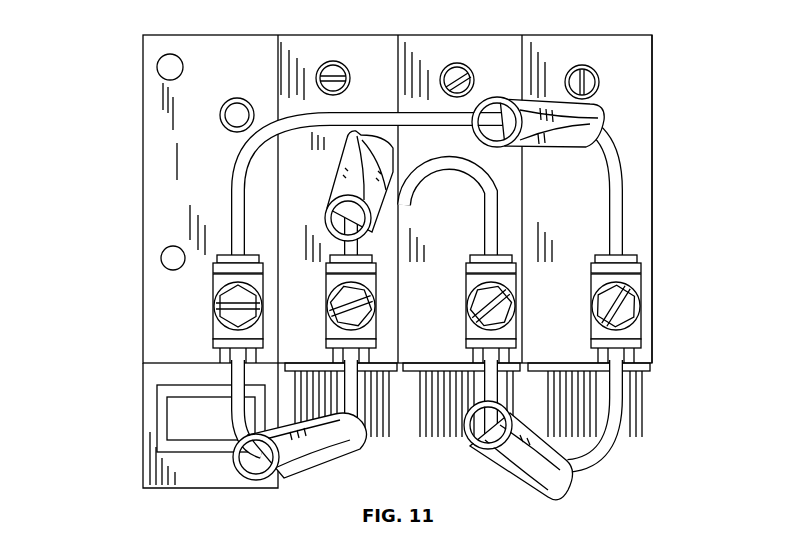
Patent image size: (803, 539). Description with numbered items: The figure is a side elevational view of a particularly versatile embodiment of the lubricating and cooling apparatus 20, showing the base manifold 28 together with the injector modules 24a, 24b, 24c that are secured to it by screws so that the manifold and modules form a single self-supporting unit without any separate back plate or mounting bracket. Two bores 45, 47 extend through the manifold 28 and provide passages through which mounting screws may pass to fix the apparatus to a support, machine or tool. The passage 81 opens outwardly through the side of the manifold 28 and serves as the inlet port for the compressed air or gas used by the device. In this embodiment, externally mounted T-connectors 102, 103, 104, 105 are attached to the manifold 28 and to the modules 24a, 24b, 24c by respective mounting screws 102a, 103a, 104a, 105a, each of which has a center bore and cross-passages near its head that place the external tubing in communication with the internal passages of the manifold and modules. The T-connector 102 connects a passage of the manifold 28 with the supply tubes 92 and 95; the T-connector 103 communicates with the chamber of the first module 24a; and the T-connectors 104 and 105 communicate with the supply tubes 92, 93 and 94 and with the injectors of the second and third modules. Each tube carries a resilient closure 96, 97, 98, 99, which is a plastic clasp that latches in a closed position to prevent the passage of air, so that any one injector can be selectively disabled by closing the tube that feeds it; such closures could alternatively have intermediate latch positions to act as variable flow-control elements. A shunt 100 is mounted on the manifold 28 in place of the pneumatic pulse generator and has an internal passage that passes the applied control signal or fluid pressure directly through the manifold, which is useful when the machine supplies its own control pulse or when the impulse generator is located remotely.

The apparatus 20 is at (654, 52).
The injector module 24a is at (308, 34).
The injector module 24b is at (410, 34).
The injector module 24c is at (548, 36).
The base manifold 28 is at (138, 40).
The bore 45 is at (161, 259).
The bore 47 is at (161, 76).
The passage 81 is at (220, 120).
The supply tube 92 is at (248, 158).
The supply tube 93 is at (461, 160).
The supply tube 94 is at (603, 447).
The supply tube 95 is at (231, 373).
The resilient closure 96 is at (551, 148).
The resilient closure 97 is at (500, 463).
The resilient closure 98 is at (308, 457).
The resilient closure 99 is at (348, 176).
The shunt 100 is at (143, 475).
The T-connector 102 is at (213, 286).
The mounting screw 102a is at (224, 313).
The T-connector 103 is at (328, 285).
The mounting screw 103a is at (347, 312).
The T-connector 104 is at (466, 286).
The mounting screw 104a is at (472, 313).
The T-connector 105 is at (591, 289).
The mounting screw 105a is at (601, 315).